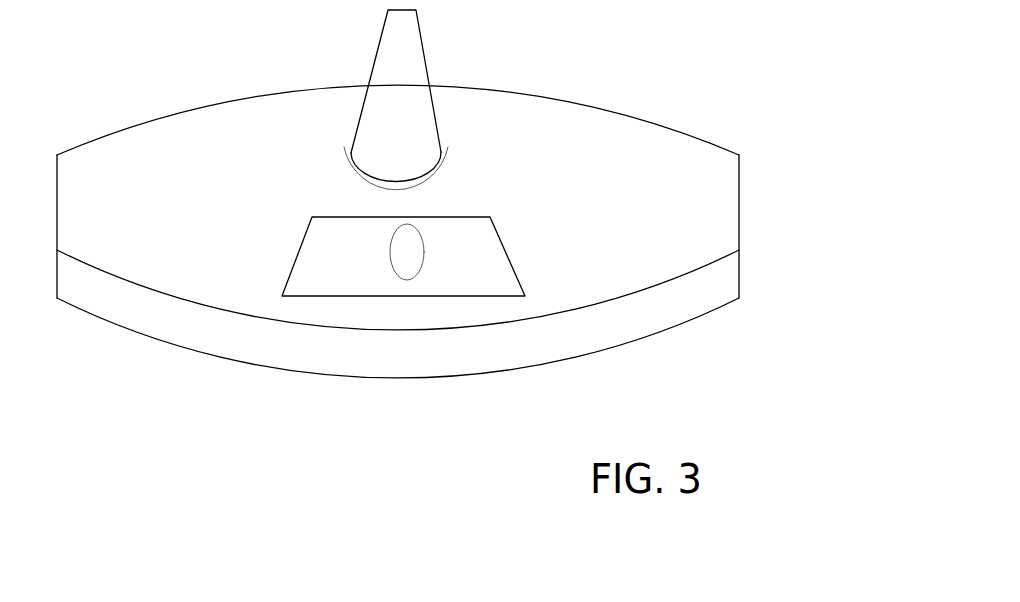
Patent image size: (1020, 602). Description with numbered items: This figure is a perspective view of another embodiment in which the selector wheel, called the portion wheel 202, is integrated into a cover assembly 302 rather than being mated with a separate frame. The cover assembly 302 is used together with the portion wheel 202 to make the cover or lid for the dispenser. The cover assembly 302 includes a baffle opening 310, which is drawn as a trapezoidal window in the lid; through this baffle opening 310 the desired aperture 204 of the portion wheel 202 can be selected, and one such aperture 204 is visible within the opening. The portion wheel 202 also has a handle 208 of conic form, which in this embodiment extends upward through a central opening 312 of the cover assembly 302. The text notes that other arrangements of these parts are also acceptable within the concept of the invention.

The cover assembly 302 is at (582, 113).
The handle 208 is at (410, 47).
The central opening 312 is at (344, 148).
The portion wheel 202 is at (460, 230).
The aperture 204 is at (417, 257).
The baffle opening 310 is at (298, 258).